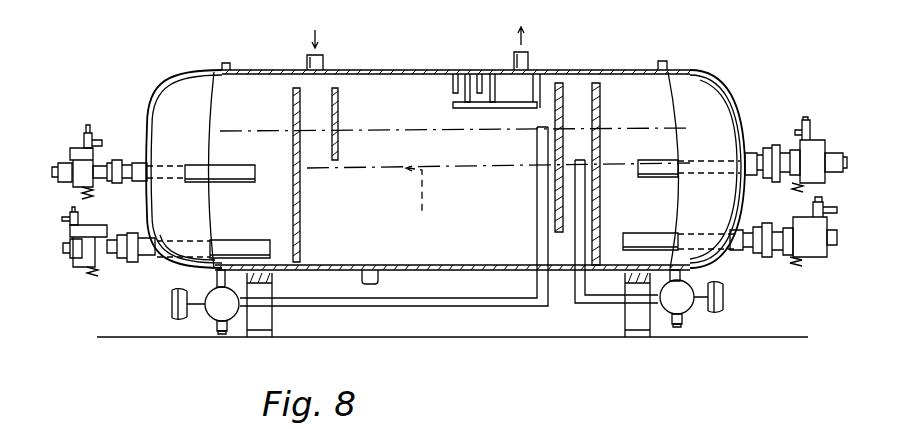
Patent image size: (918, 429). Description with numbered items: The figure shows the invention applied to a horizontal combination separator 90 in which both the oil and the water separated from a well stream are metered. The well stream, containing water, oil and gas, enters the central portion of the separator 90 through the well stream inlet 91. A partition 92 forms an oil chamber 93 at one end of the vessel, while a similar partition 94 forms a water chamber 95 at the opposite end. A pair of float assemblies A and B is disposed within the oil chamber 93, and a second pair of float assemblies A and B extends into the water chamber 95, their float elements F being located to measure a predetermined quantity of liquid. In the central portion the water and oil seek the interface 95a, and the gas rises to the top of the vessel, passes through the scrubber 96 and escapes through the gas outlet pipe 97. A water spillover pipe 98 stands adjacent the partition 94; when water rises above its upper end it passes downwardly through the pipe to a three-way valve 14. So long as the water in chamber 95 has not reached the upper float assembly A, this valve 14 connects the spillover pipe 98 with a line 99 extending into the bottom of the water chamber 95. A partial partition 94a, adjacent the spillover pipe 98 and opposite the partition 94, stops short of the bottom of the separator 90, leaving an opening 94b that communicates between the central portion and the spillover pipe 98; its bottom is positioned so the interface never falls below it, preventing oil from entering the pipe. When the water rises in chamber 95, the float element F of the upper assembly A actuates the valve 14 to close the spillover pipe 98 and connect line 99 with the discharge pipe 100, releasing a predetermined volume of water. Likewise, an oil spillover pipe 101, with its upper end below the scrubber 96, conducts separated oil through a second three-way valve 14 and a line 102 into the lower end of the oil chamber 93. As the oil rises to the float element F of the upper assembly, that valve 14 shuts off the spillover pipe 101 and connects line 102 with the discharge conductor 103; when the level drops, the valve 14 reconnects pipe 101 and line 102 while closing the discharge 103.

The horizontal separator 90 is at (417, 273).
The well stream inlet 91 is at (305, 62).
The partition 92 is at (293, 107).
The oil chamber 93 is at (232, 88).
The partition 94 is at (604, 93).
The partial partition 94a is at (557, 87).
The opening 94b is at (543, 271).
The water chamber 95 is at (640, 83).
The oil-water interface 95a is at (427, 208).
The scrubber 96 is at (450, 88).
The gas outlet pipe 97 is at (530, 55).
The water spillover pipe 98 is at (595, 303).
The line 99 is at (692, 269).
The discharge pipe 100 is at (677, 327).
The oil spillover pipe 101 is at (538, 242).
The line 102 is at (215, 278).
The discharge conductor 103 is at (222, 334).
The three-way valve 14 is at (210, 318).
The float assembly A is at (135, 148).
The float assembly B is at (140, 272).
The float element F is at (262, 170).